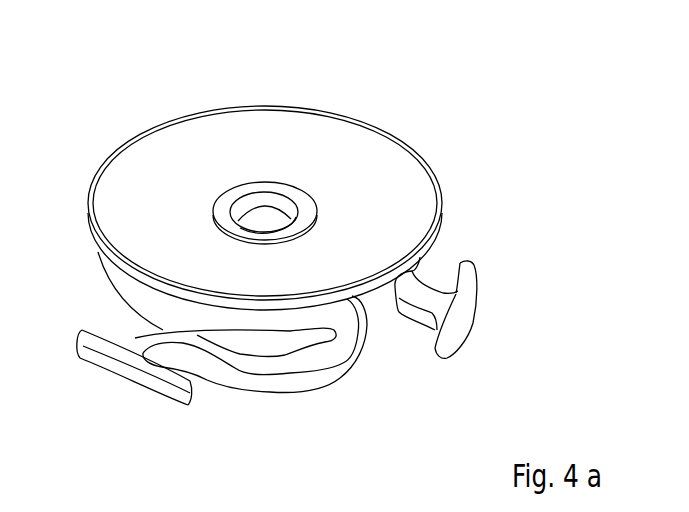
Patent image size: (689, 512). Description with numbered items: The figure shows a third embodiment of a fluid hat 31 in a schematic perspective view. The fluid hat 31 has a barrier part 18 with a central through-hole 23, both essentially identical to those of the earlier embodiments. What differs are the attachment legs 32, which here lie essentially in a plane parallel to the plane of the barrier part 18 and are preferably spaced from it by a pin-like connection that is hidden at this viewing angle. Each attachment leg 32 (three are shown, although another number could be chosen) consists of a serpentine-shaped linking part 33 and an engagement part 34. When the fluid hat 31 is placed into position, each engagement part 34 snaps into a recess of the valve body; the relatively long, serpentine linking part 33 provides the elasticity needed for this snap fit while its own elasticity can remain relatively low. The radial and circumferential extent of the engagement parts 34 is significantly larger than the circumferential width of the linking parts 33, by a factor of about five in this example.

The barrier part 18 is at (317, 152).
The through-hole 23 is at (262, 197).
The fluid hat 31 is at (308, 251).
The attachment leg 32 is at (287, 367).
The linking part 33 is at (316, 389).
The engagement part 34 is at (120, 378).